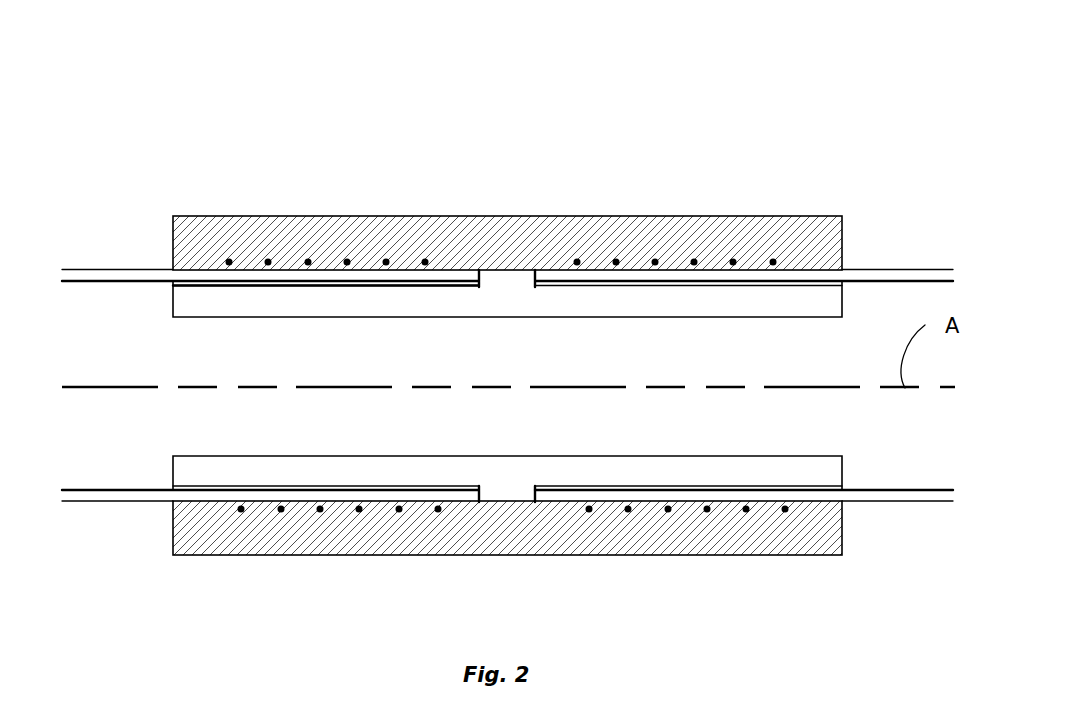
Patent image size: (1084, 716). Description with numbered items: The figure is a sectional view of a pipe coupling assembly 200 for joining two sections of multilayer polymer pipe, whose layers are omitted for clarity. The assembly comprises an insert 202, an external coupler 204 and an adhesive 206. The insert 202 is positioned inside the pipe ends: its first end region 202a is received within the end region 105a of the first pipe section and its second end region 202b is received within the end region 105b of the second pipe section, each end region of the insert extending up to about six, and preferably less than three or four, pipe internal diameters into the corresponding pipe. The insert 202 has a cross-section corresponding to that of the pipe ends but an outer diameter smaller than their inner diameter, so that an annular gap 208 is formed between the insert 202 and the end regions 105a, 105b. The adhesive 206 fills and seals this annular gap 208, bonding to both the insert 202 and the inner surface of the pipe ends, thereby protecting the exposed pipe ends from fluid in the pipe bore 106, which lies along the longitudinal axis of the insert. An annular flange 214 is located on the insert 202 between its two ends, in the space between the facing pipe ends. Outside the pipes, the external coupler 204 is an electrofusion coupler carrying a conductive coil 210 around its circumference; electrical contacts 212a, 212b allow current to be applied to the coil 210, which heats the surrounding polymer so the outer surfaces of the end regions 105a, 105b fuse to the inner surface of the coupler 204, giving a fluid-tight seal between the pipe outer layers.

The pipe coupling assembly 200 is at (803, 118).
The insert 202 is at (190, 469).
The first end region of the insert 202a is at (190, 300).
The second end region of the insert 202b is at (813, 300).
The external coupler 204 is at (368, 227).
The end region of the first section of multilayer polymer pipe 105a is at (333, 282).
The end region of the second section of multilayer polymer pipe 105b is at (675, 280).
The pipe bore 106 is at (203, 365).
The conductive coil 210 is at (577, 262).
The electrical contact 212a is at (229, 262).
The electrical contact 212b is at (774, 262).
The annular flange 214 is at (502, 488).
The adhesive 206 is at (628, 488).
The annular gap 208 is at (807, 490).